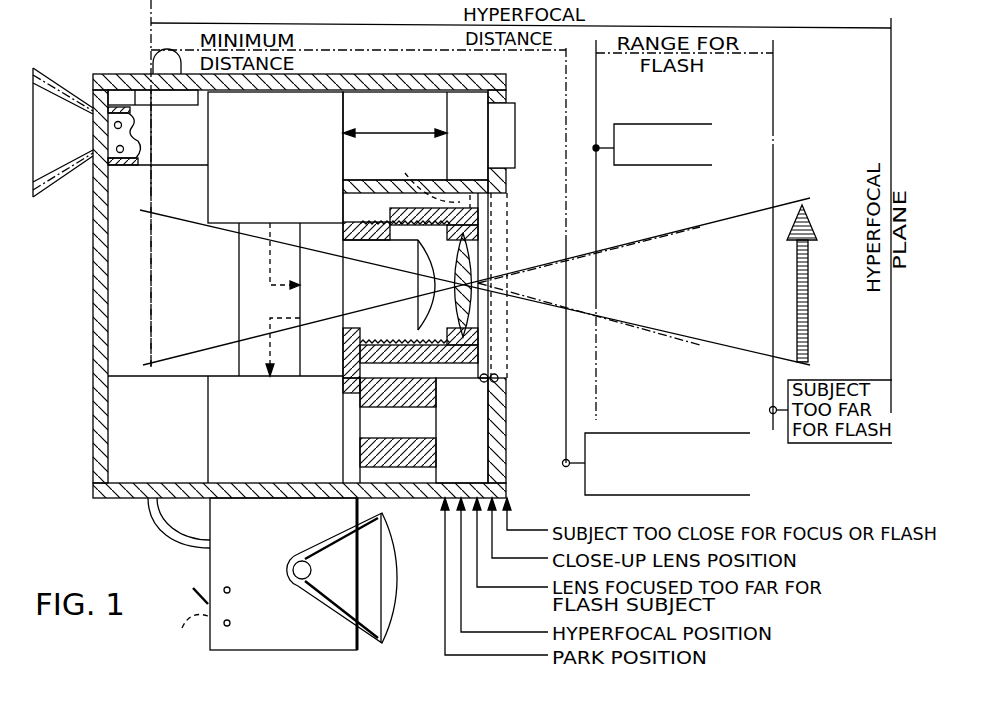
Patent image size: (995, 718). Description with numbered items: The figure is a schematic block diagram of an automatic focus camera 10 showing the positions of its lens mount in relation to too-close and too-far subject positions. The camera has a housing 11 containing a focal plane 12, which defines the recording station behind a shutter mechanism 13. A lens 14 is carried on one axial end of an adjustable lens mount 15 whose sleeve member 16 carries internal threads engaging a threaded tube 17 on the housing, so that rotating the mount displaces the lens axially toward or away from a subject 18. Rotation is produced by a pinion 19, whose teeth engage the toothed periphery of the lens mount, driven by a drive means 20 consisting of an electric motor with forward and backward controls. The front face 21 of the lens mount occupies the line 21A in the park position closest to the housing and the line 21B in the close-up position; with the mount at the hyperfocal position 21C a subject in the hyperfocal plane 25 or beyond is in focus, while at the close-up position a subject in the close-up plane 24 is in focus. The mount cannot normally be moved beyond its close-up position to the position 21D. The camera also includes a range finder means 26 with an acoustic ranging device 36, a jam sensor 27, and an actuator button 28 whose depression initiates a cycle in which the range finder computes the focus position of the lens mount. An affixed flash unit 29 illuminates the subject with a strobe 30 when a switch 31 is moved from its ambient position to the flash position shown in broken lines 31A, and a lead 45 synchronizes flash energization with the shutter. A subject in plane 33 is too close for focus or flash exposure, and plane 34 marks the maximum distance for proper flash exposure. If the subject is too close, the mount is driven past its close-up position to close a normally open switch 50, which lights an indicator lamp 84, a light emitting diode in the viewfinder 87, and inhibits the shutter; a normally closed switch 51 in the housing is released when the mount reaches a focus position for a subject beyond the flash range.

The automatic focus camera 10 is at (270, 320).
The housing 11 is at (93, 213).
The focal plane 12 is at (150, 273).
The shutter mechanism 13 is at (300, 293).
The lens 14 is at (470, 262).
The adjustable lens mount 15 is at (478, 342).
The sleeve member 16 is at (418, 382).
The threaded tube 17 is at (365, 222).
The subject 18 is at (810, 298).
The pinion 19 is at (430, 455).
The drive means 20 is at (221, 393).
The front face 21 is at (482, 306).
The park position line 21A is at (470, 195).
The close-up position line 21B is at (491, 202).
The hyperfocal position 21C is at (428, 177).
The beyond close-up position 21D is at (507, 226).
The close-up plane 24 is at (596, 108).
The hyperfocal plane 25 is at (891, 67).
The range finder means 26 is at (318, 110).
The jam sensor 27 is at (118, 460).
The actuator button 28 is at (153, 66).
The flash unit 29 is at (336, 642).
The strobe 30 is at (378, 596).
The switch 31 is at (198, 590).
The flash position 31A is at (182, 628).
The too-close plane 33 is at (566, 421).
The maximum flash distance plane 34 is at (773, 175).
The acoustic ranging device 36 is at (505, 122).
The lead 45 is at (172, 541).
The normally open switch 50 is at (498, 376).
The normally closed switch 51 is at (486, 376).
The indicator lamp 84 is at (120, 153).
The viewfinder 87 is at (66, 92).